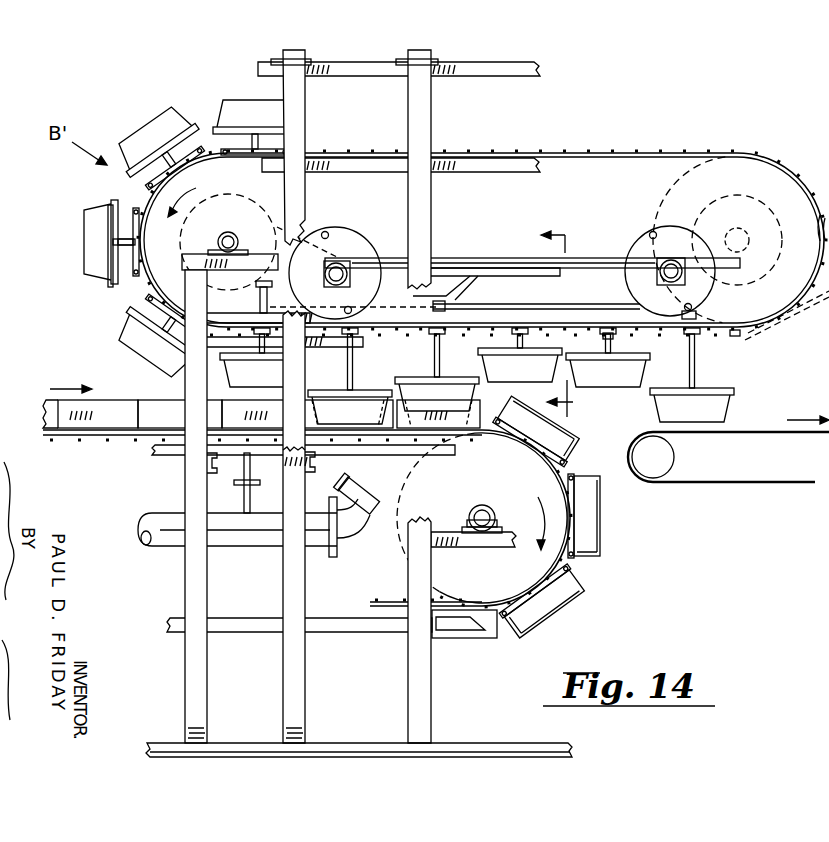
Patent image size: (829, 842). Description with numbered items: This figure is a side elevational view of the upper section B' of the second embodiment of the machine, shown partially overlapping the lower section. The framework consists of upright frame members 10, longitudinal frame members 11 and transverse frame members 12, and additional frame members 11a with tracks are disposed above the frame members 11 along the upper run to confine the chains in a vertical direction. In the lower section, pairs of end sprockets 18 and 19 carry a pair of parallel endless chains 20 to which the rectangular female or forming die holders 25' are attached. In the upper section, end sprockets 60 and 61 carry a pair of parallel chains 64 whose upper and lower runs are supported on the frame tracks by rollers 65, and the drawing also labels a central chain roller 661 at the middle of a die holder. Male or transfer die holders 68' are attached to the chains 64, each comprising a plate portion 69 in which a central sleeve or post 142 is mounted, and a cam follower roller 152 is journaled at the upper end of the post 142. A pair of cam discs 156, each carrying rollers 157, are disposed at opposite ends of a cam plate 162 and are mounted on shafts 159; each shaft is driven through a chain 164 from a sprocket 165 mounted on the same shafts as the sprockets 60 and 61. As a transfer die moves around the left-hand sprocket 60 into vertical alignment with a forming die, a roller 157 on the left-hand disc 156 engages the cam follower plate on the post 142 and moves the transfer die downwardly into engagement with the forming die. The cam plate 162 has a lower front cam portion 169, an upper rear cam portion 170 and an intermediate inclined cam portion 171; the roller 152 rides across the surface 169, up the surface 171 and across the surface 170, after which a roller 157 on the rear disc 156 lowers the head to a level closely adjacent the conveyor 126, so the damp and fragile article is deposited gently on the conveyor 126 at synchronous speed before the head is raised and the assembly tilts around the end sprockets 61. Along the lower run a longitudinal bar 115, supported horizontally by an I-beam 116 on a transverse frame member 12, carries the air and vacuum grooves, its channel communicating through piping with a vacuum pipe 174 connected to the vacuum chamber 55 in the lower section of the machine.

The upright frame members 10 is at (410, 670).
The longitudinal frame members 11 is at (503, 163).
The additional frame members 11a is at (223, 313).
The transverse frame members 12 is at (432, 240).
The end sprockets 18 is at (570, 312).
The end sprockets 19 is at (532, 572).
The endless chains 20 is at (570, 562).
The forming die holders 25' is at (344, 463).
The vacuum chamber 55 is at (230, 547).
The end sprockets 60 is at (240, 185).
The end sprockets 61 is at (770, 173).
The parallel chains 64 is at (147, 203).
The rollers 65 is at (303, 148).
The connecting rod 661 is at (140, 242).
The transfer die holders 68' is at (385, 311).
The plate portion 69 is at (212, 150).
The longitudinal bar 115 is at (567, 311).
The I-beam 116 is at (570, 295).
The conveyor 126 is at (755, 427).
The central sleeve or post 142 is at (350, 368).
The cam follower roller 152 is at (517, 260).
The cam discs 156 is at (363, 250).
The rollers 157 is at (326, 231).
The shafts 159 is at (347, 274).
The cam plate 162 is at (470, 270).
The chain 164 is at (687, 227).
The sprocket 165 is at (728, 193).
The lower front cam portion 169 is at (383, 333).
The upper rear cam portion 170 is at (588, 266).
The intermediate inclined cam portion 171 is at (450, 292).
The vacuum pipe 174 is at (360, 503).